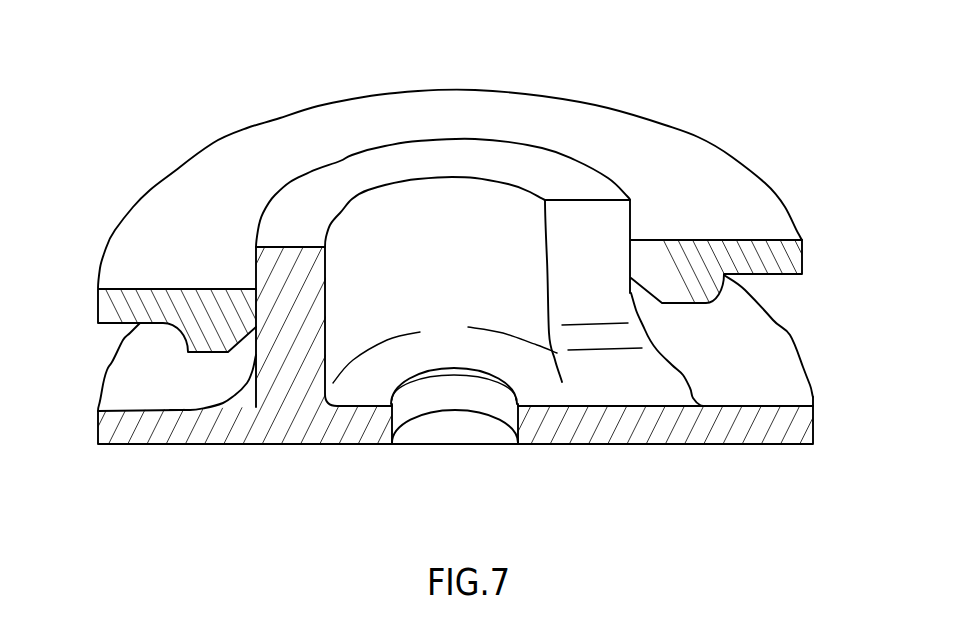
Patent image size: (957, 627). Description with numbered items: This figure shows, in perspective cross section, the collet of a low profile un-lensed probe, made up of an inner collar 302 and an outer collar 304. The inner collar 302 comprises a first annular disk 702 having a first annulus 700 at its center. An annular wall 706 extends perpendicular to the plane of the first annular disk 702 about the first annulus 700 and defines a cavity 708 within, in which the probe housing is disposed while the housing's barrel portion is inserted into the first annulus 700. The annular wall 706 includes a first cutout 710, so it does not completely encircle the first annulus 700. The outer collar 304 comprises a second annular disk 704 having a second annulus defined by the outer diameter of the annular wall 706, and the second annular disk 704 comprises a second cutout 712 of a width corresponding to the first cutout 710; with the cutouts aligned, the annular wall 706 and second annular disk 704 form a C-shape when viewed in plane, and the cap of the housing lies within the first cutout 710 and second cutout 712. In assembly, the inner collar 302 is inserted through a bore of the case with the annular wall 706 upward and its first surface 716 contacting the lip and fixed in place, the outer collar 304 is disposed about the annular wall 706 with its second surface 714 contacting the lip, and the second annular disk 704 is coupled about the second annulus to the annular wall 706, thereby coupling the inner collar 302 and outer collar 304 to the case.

The first annulus 700 is at (448, 432).
The first annular disk 702 is at (763, 444).
The second annular disk 704 is at (475, 90).
The annular wall 706 is at (312, 295).
The cavity 708 is at (495, 212).
The first cutout 710 is at (608, 223).
The second cutout 712 is at (785, 248).
The second surface 714 is at (110, 325).
The first surface 716 is at (121, 412).
The inner collar 302 is at (820, 393).
The outer collar 304 is at (713, 118).